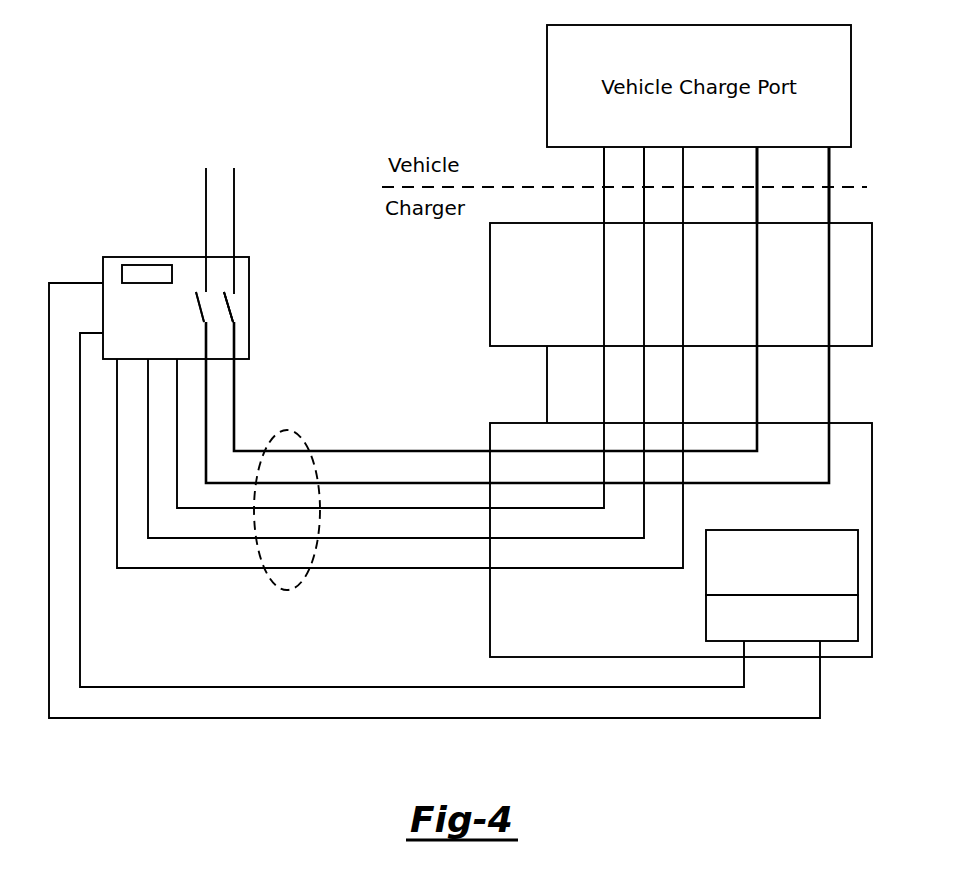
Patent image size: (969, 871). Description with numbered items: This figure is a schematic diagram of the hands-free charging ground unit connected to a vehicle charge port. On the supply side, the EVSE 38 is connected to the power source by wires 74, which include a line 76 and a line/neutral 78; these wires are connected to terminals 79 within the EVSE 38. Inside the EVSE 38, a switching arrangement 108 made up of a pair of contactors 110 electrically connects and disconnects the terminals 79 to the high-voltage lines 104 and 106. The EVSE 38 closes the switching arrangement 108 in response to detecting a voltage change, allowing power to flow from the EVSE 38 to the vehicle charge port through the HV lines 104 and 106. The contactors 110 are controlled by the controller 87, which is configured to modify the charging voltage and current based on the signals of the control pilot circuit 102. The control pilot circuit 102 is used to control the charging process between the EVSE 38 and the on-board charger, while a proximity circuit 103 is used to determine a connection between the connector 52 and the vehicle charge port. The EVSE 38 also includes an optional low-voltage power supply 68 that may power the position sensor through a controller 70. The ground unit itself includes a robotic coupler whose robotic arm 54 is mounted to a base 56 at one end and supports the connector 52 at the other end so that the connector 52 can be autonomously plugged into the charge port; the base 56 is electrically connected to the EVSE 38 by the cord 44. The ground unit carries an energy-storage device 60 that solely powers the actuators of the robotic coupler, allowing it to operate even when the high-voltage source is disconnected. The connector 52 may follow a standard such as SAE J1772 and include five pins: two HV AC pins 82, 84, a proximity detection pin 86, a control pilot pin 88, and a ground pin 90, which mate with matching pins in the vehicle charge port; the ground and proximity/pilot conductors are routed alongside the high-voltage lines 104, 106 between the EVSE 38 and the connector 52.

The EVSE 38 is at (169, 286).
The cord 44 is at (287, 430).
The connector 52 is at (490, 283).
The robotic arm 54 is at (547, 385).
The base 56 is at (872, 423).
The energy-storage device 60 is at (858, 563).
The low-voltage power supply 68 is at (146, 672).
The controller 70 is at (858, 618).
The wires 74 is at (229, 213).
The line 76 is at (234, 229).
The line/neutral 78 is at (206, 192).
The terminals 79 is at (248, 297).
The HV AC pin 82 is at (829, 200).
The HV AC pin 84 is at (757, 157).
The proximity detection pin 86 is at (604, 200).
The controller 87 is at (140, 265).
The control pilot pin 88 is at (644, 157).
The ground pin 90 is at (683, 197).
The control pilot circuit 102 is at (170, 568).
The proximity circuit 103 is at (228, 508).
The HV line 104 is at (443, 451).
The HV line 106 is at (393, 483).
The switching arrangement 108 is at (182, 329).
The contactors 110 is at (235, 312).